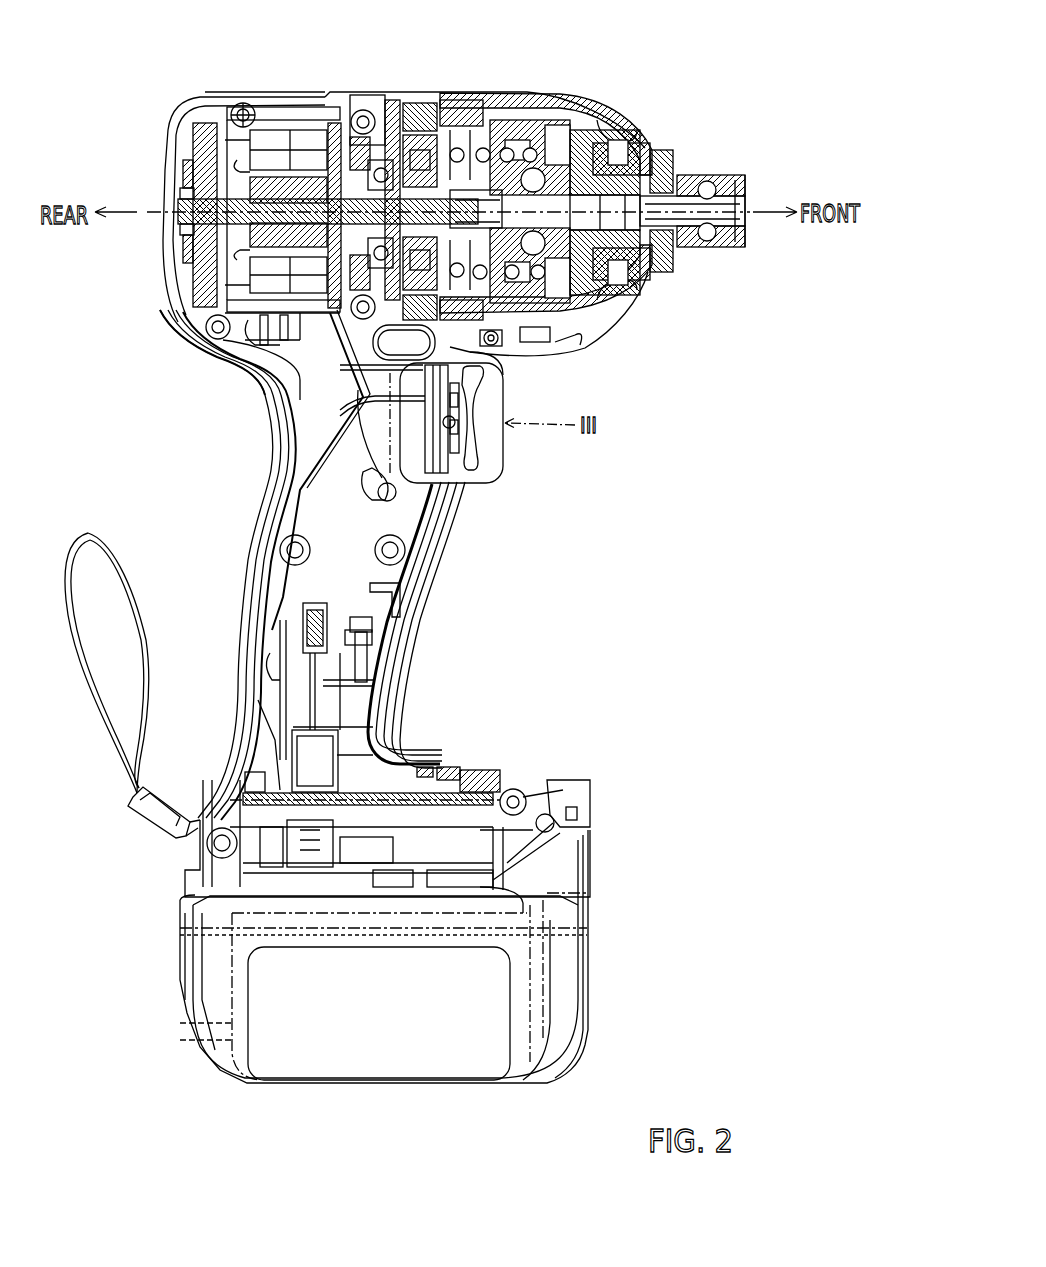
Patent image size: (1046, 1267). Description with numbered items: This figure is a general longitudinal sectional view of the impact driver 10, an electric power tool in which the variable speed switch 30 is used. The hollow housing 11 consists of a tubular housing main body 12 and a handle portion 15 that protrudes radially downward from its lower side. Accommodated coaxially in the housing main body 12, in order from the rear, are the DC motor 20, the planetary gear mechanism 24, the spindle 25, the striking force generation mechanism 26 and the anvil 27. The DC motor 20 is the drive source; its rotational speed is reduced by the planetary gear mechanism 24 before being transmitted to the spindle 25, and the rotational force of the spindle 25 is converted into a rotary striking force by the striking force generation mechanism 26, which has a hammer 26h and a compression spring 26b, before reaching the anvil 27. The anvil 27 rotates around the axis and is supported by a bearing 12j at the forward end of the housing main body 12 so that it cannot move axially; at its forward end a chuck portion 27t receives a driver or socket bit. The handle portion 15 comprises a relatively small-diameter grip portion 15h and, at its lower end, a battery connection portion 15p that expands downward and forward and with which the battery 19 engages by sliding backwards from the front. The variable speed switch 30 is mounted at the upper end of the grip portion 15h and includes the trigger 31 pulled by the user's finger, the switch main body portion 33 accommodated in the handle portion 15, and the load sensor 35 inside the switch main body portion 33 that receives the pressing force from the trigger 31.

The impact driver 10 is at (541, 80).
The housing 11 is at (475, 77).
The housing main body 12 is at (440, 83).
The bearing 12j is at (650, 277).
The handle portion 15 is at (466, 573).
The grip portion 15h is at (420, 593).
The battery connection portion 15p is at (432, 765).
The battery 19 is at (592, 905).
The DC motor 20 is at (290, 150).
The planetary gear mechanism 24 is at (393, 104).
The spindle 25 is at (482, 168).
The striking force generation mechanism 26 is at (560, 132).
The hammer 26h is at (600, 140).
The compression spring 26b is at (572, 345).
The anvil 27 is at (655, 182).
The chuck portion 27t is at (720, 176).
The variable speed switch 30 is at (500, 450).
The trigger 31 is at (487, 402).
The switch main body portion 33 is at (440, 505).
The load sensor 35 is at (455, 475).